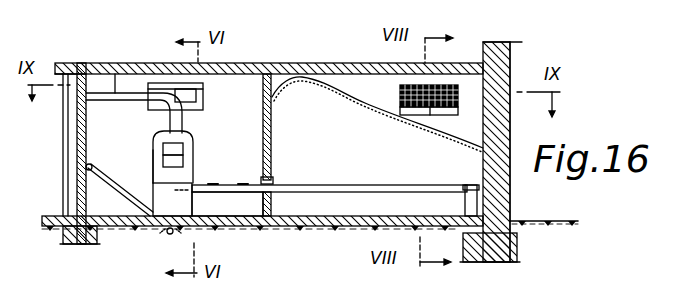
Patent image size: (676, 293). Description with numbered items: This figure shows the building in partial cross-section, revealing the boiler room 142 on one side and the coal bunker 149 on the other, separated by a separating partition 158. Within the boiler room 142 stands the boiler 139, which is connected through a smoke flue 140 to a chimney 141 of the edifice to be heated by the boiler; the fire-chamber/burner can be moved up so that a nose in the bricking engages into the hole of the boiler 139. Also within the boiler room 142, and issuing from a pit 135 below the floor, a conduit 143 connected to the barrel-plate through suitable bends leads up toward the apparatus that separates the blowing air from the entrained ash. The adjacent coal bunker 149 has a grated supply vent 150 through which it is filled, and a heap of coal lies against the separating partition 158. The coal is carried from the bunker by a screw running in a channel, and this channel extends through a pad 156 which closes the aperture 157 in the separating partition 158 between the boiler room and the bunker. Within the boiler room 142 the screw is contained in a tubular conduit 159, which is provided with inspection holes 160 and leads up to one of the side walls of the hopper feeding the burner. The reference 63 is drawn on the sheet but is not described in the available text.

The pit 135 is at (168, 235).
The boiler 139 is at (193, 143).
The smoke flue 140 is at (115, 93).
The chimney 141 is at (75, 73).
The boiler room 142 is at (199, 96).
The conduit 143 is at (123, 178).
The housing base 63 is at (173, 192).
The coal bunker 149 is at (377, 114).
The grated supply vent 150 is at (437, 96).
The pad 156 is at (272, 173).
The aperture 157 is at (285, 195).
The separating partition 158 is at (273, 121).
The tubular conduit 159 is at (226, 191).
The inspection holes 160 is at (206, 189).